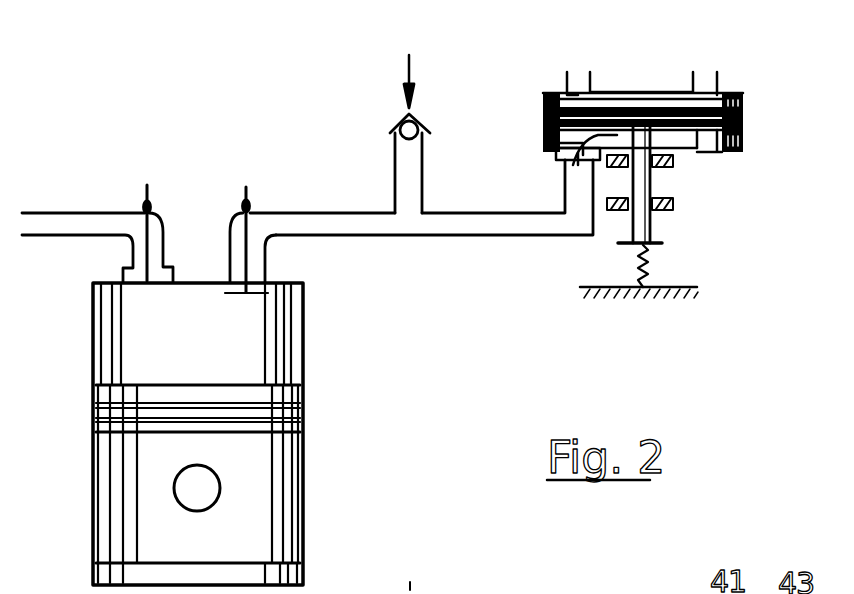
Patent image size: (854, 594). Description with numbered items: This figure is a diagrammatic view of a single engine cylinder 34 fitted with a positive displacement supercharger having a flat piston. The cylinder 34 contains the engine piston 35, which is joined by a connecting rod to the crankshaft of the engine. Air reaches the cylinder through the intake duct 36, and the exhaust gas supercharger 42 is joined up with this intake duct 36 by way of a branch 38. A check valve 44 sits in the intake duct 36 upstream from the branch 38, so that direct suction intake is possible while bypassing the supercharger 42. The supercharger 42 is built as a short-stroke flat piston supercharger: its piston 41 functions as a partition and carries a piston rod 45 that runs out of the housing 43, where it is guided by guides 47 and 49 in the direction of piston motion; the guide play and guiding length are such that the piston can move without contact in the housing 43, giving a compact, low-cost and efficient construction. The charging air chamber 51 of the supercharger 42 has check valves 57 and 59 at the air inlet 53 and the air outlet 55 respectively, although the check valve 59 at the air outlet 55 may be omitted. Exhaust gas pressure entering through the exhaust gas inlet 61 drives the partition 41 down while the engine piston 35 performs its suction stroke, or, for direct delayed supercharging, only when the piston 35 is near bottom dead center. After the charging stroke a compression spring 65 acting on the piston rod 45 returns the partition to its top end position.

The engine cylinder 34 is at (303, 347).
The piston 35 is at (287, 467).
The intake duct 36 is at (398, 185).
The branch 38 is at (397, 217).
The piston 41 is at (603, 100).
The exhaust gas supercharger 42 is at (543, 100).
The housing 43 is at (543, 144).
The check valve 44 is at (403, 118).
The piston rod 45 is at (657, 178).
The guide 47 is at (668, 165).
The guide 49 is at (670, 212).
The charging air chamber 51 is at (677, 97).
The air inlet 53 is at (705, 150).
The air outlet 55 is at (567, 170).
The check valve 57 is at (700, 125).
The check valve 59 is at (607, 122).
The exhaust gas inlet 61 is at (575, 80).
The compression spring 65 is at (637, 270).